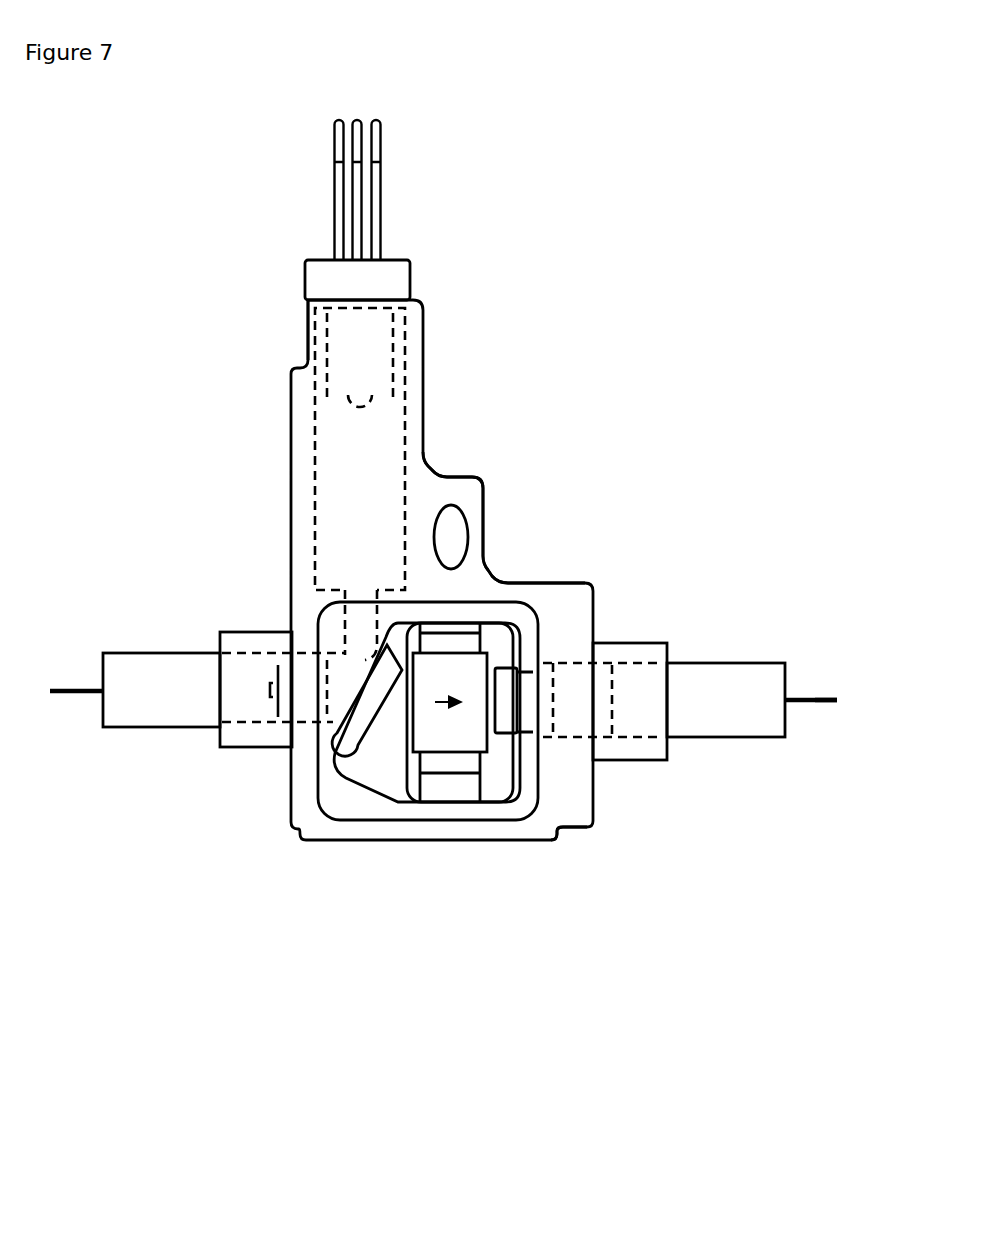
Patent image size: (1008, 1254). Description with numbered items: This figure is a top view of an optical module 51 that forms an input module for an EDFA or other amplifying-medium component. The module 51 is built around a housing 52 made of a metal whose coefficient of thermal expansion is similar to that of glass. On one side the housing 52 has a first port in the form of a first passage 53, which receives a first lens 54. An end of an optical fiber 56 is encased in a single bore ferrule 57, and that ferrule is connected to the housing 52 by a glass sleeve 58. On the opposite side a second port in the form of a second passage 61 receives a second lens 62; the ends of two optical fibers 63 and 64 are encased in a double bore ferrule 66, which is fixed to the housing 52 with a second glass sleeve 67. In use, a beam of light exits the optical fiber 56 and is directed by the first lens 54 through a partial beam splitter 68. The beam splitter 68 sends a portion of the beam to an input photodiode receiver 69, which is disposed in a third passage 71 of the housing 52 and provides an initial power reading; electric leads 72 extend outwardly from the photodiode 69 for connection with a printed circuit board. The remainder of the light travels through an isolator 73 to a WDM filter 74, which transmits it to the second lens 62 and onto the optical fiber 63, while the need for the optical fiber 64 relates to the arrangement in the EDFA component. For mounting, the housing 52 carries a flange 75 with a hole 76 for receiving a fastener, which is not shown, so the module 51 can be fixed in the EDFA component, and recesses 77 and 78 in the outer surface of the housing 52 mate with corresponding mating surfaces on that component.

The module 51 is at (588, 246).
The housing 52 is at (289, 415).
The first passage 53 is at (388, 643).
The first lens 54 is at (273, 660).
The optical fiber 56 is at (72, 690).
The single bore ferrule 57 is at (152, 720).
The glass sleeve 58 is at (222, 635).
The second passage 61 is at (543, 680).
The second lens 62 is at (573, 720).
The optical fiber 63 is at (828, 693).
The optical fiber 64 is at (823, 707).
The double bore ferrule 66 is at (717, 717).
The second glass sleeve 67 is at (655, 645).
The partial beam splitter 68 is at (363, 720).
The input photodiode receiver 69 is at (410, 262).
The third passage 71 is at (390, 363).
The electric leads 72 is at (337, 115).
The isolator 73 is at (443, 720).
The WDM filter 74 is at (507, 735).
The flange 75 is at (485, 518).
The hole 76 is at (453, 522).
The recess 77 is at (298, 328).
The recess 78 is at (567, 837).